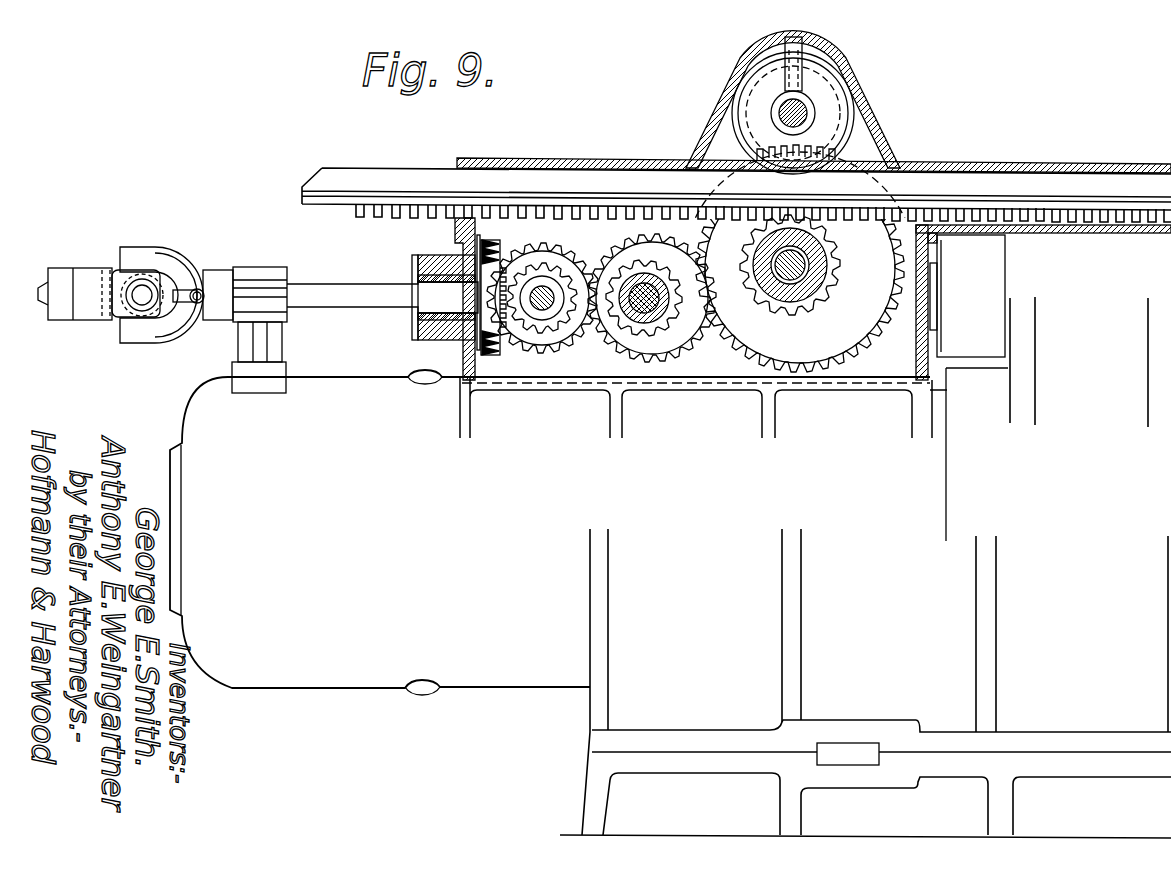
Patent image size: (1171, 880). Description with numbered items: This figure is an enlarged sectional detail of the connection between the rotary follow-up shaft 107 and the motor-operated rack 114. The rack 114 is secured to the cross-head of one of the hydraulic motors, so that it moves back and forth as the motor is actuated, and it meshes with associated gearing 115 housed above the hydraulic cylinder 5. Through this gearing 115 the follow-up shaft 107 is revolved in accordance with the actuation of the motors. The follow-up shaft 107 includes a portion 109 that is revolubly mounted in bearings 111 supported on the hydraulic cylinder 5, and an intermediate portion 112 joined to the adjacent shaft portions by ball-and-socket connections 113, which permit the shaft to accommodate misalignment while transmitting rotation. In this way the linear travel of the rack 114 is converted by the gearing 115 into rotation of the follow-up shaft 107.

The cylinder 5 is at (380, 532).
The follow-up shaft 107 is at (48, 282).
The shaft portion 109 is at (338, 290).
The bearings 111 is at (262, 273).
The intermediate portion 112 is at (40, 300).
The ball-and-socket connections 113 is at (142, 297).
The rack 114 is at (993, 193).
The gearing 115 is at (598, 255).